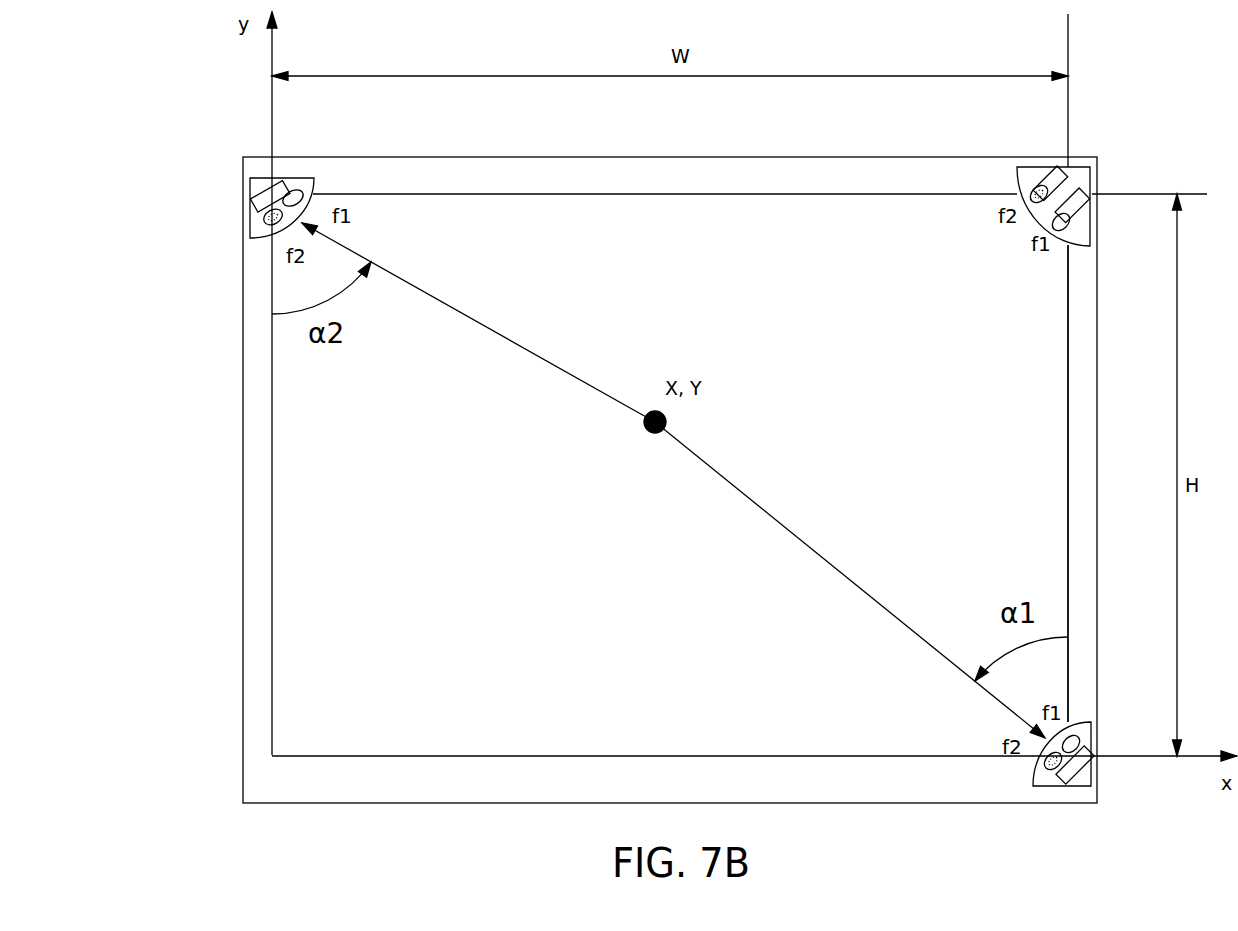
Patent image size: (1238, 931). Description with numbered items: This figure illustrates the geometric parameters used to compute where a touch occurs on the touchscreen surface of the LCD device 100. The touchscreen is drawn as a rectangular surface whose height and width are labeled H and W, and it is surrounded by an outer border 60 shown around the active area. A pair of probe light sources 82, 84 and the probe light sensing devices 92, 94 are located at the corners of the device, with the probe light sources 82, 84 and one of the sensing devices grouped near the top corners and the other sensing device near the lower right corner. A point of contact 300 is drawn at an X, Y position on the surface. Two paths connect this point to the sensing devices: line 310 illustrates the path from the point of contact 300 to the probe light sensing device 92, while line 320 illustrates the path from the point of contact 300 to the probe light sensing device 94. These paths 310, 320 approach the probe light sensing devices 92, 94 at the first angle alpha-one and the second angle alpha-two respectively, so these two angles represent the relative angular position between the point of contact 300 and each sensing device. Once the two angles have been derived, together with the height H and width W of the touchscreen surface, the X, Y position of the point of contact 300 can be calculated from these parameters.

The LCD device 100 is at (157, 76).
The frame / bezel 60 is at (436, 787).
The probe light sensing device 94 is at (270, 202).
The probe light source 84 is at (1093, 167).
The probe light source 82 is at (1092, 207).
The probe light sensing device 92 is at (1066, 770).
The point of contact 300 is at (641, 422).
The line (path) 310 is at (860, 587).
The line (path) 320 is at (500, 332).